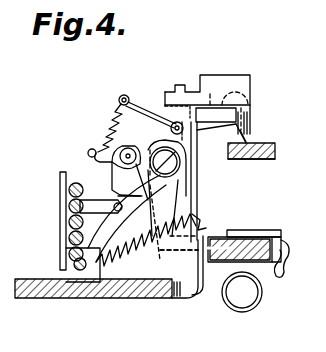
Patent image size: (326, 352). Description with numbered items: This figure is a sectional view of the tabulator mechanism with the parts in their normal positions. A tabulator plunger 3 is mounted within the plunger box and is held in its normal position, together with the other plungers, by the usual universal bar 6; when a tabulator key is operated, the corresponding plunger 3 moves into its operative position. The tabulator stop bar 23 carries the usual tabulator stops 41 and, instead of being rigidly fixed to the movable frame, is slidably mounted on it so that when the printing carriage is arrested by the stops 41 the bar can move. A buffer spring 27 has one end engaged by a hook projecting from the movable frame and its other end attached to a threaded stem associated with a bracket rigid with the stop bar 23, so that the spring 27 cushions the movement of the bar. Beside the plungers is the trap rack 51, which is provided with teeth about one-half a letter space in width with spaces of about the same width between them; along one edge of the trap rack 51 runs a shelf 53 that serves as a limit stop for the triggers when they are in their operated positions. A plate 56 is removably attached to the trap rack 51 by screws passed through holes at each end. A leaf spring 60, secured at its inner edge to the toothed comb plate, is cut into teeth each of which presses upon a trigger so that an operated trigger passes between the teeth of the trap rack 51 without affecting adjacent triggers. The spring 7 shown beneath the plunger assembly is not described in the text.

The leaf spring 60 is at (142, 108).
The plate 56 is at (258, 144).
The trap rack 51 is at (270, 160).
The shelf 53 is at (236, 158).
The universal bar 6 is at (212, 228).
The tabulator stops 41 is at (272, 236).
The tabulator stop bar 23 is at (272, 266).
The buffer spring 27 is at (258, 306).
The spring 7 is at (116, 258).
The tabulator plungers 3 is at (170, 248).